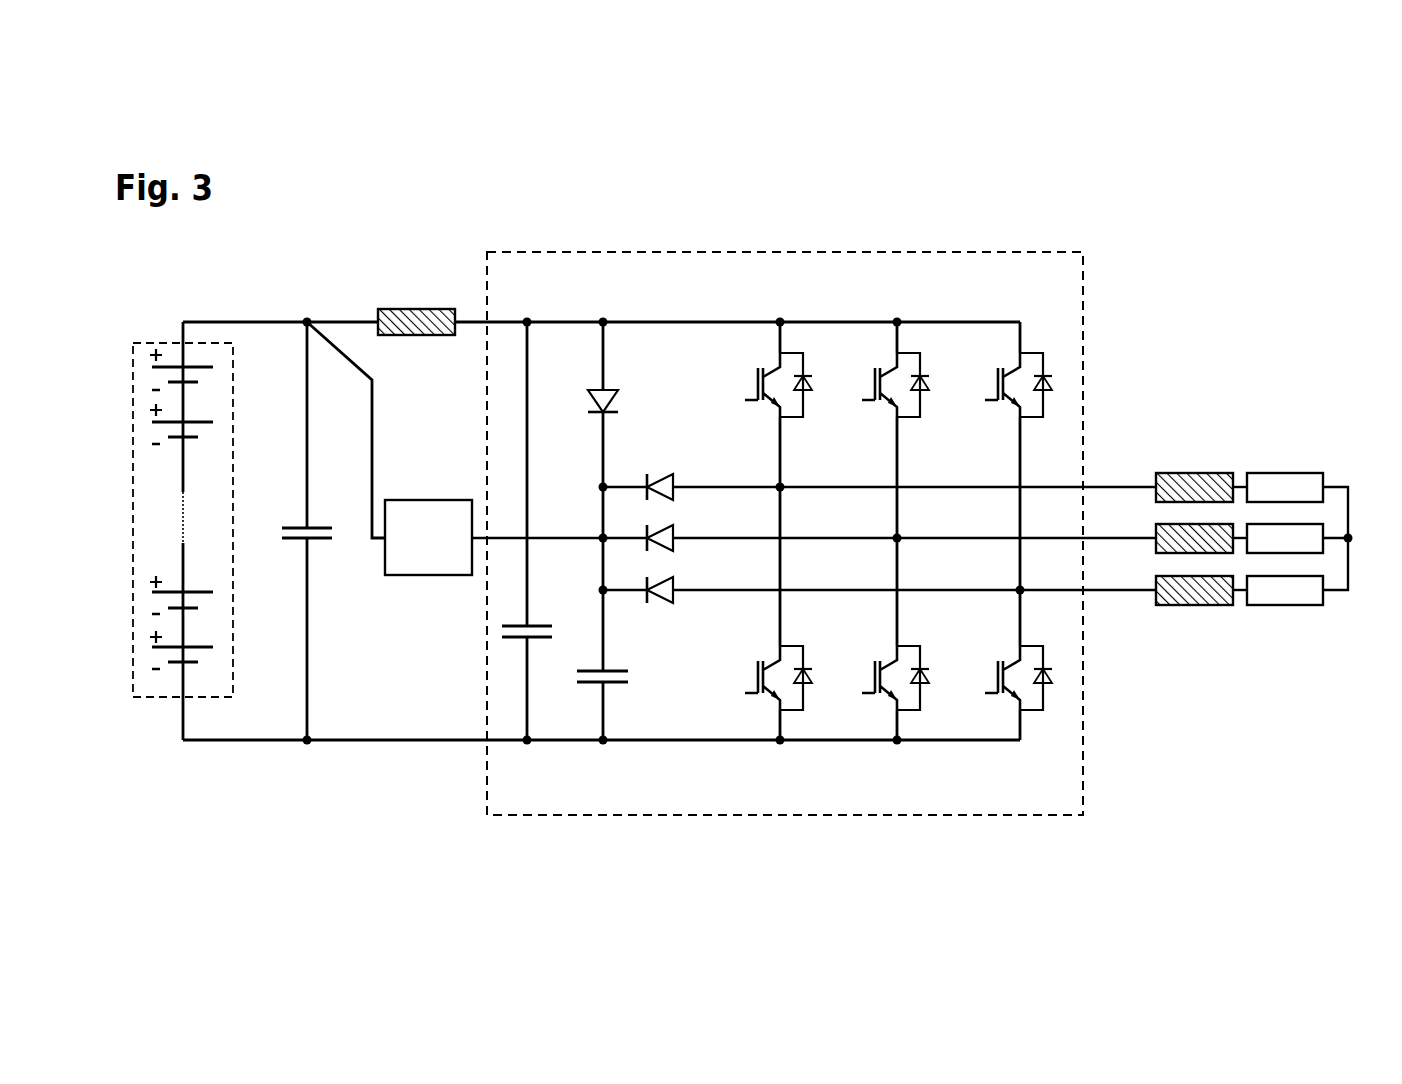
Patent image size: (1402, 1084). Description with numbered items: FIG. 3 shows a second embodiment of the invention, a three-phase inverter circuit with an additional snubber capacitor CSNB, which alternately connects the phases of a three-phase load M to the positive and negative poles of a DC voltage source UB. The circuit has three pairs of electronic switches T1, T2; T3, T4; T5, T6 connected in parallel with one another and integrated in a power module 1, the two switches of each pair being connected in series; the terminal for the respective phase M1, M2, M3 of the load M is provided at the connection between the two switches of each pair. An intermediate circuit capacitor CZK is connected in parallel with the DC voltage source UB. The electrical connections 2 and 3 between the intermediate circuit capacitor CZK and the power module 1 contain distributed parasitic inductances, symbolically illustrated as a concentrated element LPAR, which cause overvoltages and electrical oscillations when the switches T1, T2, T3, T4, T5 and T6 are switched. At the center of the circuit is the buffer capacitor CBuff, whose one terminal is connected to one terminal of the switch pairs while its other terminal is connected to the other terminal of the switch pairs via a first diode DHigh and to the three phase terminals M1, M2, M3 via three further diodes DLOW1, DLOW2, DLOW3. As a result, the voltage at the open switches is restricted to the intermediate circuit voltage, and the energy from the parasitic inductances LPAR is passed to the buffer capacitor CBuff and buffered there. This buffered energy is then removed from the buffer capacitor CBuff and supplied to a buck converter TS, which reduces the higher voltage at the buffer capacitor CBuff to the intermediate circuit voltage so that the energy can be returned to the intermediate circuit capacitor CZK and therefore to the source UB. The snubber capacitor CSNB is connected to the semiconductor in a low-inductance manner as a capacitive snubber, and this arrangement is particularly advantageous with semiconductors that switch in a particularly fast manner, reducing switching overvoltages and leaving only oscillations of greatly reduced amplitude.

The power module 1 is at (970, 252).
The electrical connection 2 is at (348, 322).
The electrical connection 3 is at (348, 742).
The DC voltage source UB is at (183, 511).
The parasitic inductance LPAR is at (416, 305).
The intermediate circuit capacitor CZK is at (324, 531).
The buck converter TS is at (455, 448).
The snubber capacitor CSNB is at (546, 531).
The first diode DHigh is at (634, 404).
The buffer capacitor CBuff is at (625, 612).
The further diode DLOW1 is at (879, 479).
The further diode DLOW2 is at (879, 530).
The further diode DLOW3 is at (879, 582).
The electronic switch T1 is at (778, 404).
The electronic switch T2 is at (778, 613).
The electronic switch T3 is at (895, 430).
The electronic switch T4 is at (895, 639).
The electronic switch T5 is at (1018, 456).
The electronic switch T6 is at (1018, 665).
The three-phase load M is at (1235, 521).
The phase terminal M1 is at (1220, 477).
The phase terminal M2 is at (1220, 528).
The phase terminal M3 is at (1220, 580).